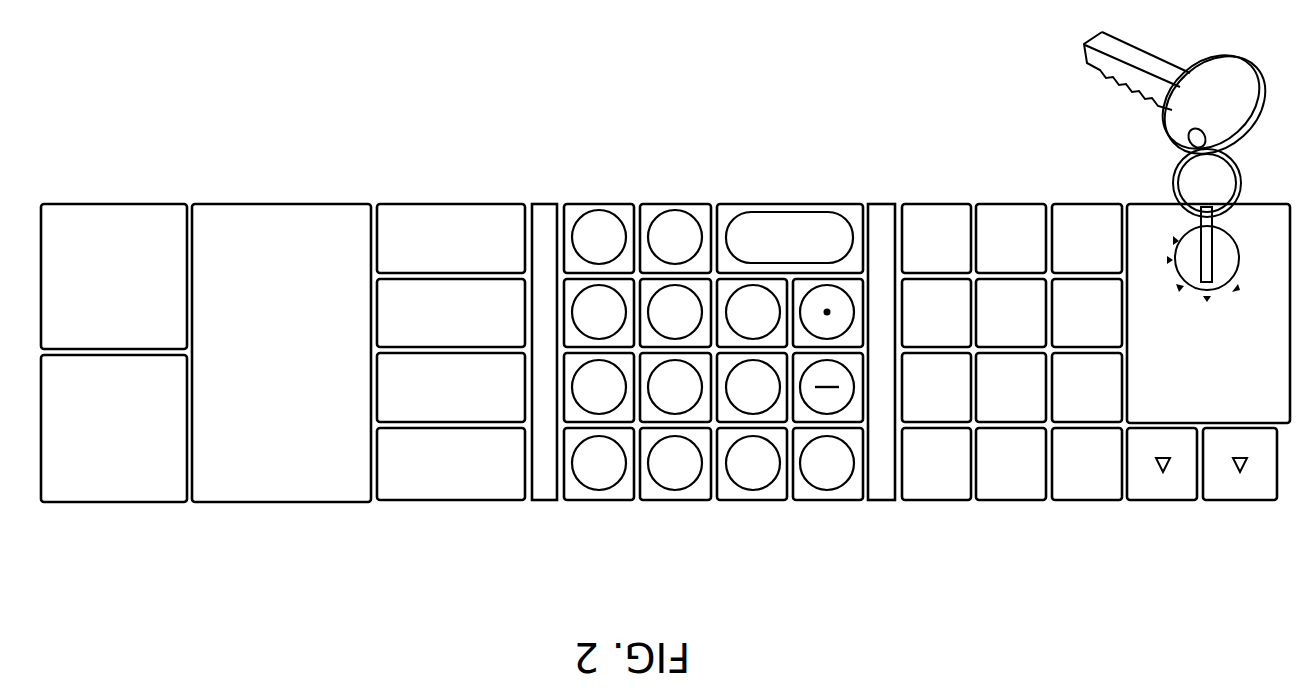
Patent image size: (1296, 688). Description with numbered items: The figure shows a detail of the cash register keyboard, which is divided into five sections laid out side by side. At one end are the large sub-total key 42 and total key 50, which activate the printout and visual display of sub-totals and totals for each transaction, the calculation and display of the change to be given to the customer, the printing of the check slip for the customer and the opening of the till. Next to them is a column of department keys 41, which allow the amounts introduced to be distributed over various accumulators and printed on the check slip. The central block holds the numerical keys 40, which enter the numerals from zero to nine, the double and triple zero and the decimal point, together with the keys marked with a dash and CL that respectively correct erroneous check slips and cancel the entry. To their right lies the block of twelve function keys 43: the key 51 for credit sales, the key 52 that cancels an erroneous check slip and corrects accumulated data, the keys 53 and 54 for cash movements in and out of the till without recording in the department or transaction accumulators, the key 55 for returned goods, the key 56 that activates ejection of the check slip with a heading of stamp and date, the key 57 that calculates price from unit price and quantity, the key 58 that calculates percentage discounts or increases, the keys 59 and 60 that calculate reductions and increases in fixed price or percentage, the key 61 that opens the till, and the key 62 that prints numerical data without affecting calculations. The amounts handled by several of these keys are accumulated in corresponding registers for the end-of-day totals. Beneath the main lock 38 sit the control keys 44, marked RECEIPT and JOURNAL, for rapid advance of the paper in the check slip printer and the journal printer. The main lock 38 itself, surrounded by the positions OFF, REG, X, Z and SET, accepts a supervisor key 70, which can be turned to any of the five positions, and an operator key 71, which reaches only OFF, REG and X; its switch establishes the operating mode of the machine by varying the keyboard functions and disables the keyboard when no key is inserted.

The main lock 38 is at (1230, 255).
The numerical keys 40 is at (651, 519).
The department keys 41 is at (388, 317).
The sub-total key 42 is at (93, 502).
The function keys 43 is at (1018, 377).
The control keys 44 is at (1223, 490).
The total key 50 is at (128, 218).
The CRED key 51 is at (1087, 217).
The CORR key 52 is at (1018, 300).
The CASH IN key 53 is at (1110, 327).
The CASH OUT key 54 is at (1031, 232).
The REFUND key 55 is at (1085, 490).
The DATE key 56 is at (957, 295).
The X key 57 is at (935, 490).
The % key 58 is at (913, 407).
The REDN key 59 is at (1110, 410).
The INC key 60 is at (1038, 392).
The OPEN TILL key 61 is at (1010, 490).
The # key 62 is at (945, 213).
The supervisor key 70 is at (1212, 243).
The operator key 71 is at (1223, 80).